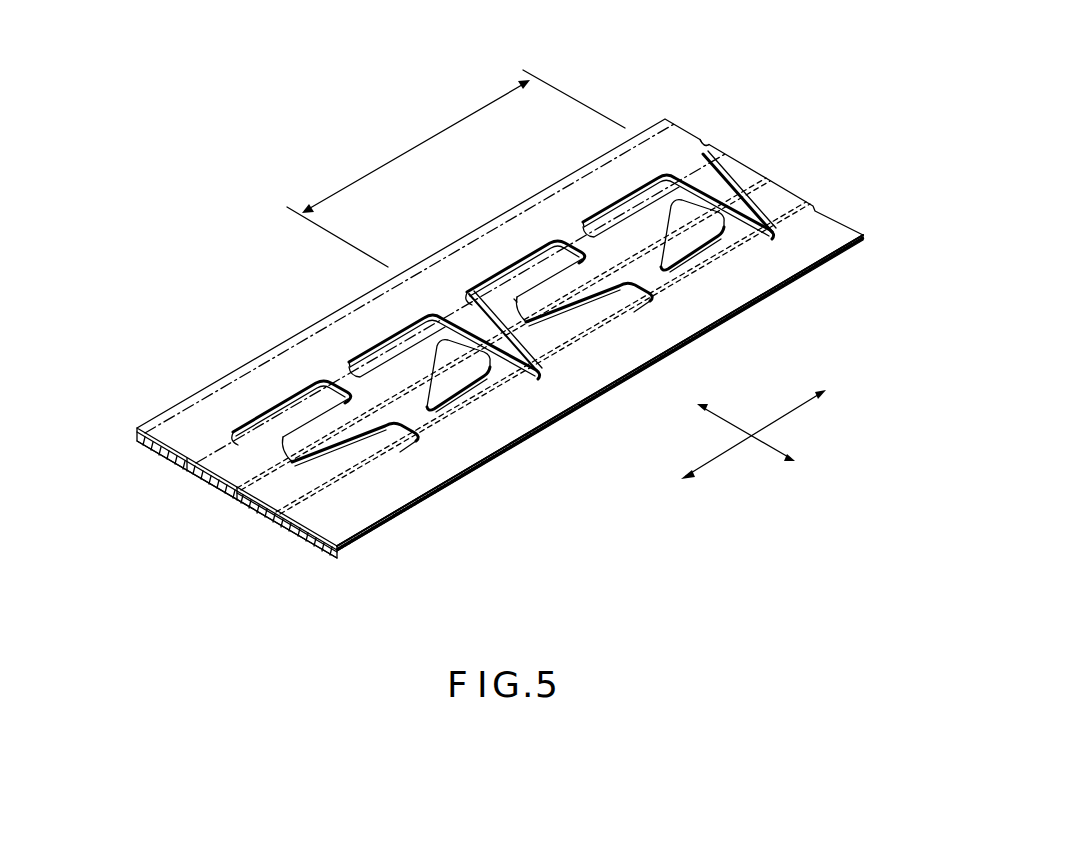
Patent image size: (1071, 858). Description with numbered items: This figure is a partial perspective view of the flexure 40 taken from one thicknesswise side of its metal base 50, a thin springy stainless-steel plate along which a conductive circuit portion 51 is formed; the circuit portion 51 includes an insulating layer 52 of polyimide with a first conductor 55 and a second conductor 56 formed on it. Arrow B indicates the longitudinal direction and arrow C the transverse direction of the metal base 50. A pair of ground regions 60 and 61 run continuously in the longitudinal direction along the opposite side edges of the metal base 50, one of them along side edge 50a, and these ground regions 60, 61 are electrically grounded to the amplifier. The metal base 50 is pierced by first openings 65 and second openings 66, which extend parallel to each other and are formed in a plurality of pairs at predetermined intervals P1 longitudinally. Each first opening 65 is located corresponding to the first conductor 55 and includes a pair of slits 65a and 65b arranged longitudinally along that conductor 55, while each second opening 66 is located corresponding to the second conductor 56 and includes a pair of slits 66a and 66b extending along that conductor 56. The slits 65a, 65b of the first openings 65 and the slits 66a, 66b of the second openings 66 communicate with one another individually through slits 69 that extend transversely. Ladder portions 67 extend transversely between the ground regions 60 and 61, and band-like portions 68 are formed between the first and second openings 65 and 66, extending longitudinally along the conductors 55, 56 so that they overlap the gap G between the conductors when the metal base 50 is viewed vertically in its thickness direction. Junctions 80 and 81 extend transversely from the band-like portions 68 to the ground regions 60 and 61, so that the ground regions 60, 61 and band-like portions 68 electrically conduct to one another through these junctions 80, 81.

The flexure 40 is at (280, 332).
The metal base 50 is at (513, 443).
The side edge 50a is at (643, 126).
The conductive circuit portion 51 is at (229, 527).
The insulating layer 52 is at (313, 540).
The first conductor 55 is at (207, 490).
The second conductor 56 is at (263, 513).
The ground region 60 is at (650, 153).
The ground region 61 is at (813, 238).
The first opening 65 is at (293, 379).
The slit 65a is at (385, 363).
The slit 65b is at (267, 430).
The second opening 66 is at (693, 333).
The slit 66a is at (722, 242).
The slit 66b is at (627, 350).
The ladder portion 67 is at (477, 320).
The band-like portion 68 is at (415, 373).
The slit 69 is at (712, 200).
The junction 80 is at (350, 380).
The junction 81 is at (430, 408).
The gap G is at (572, 295).
The predetermined interval P1 is at (405, 153).
The arrow B is at (704, 458).
The arrow C is at (756, 444).